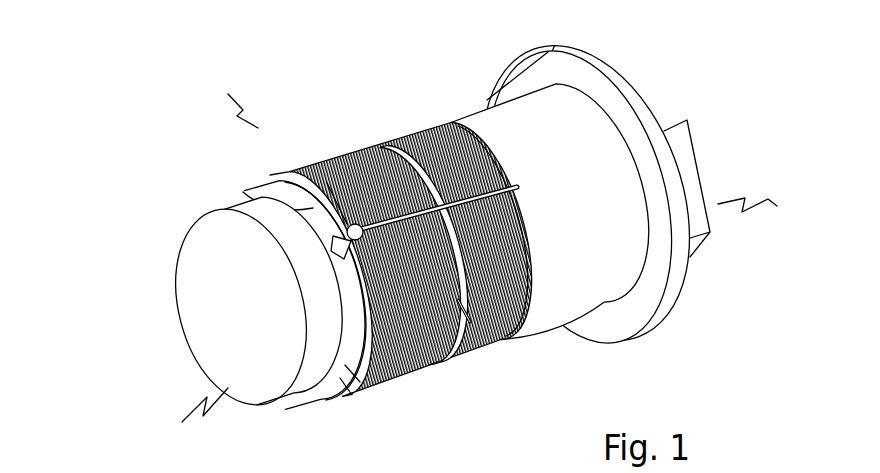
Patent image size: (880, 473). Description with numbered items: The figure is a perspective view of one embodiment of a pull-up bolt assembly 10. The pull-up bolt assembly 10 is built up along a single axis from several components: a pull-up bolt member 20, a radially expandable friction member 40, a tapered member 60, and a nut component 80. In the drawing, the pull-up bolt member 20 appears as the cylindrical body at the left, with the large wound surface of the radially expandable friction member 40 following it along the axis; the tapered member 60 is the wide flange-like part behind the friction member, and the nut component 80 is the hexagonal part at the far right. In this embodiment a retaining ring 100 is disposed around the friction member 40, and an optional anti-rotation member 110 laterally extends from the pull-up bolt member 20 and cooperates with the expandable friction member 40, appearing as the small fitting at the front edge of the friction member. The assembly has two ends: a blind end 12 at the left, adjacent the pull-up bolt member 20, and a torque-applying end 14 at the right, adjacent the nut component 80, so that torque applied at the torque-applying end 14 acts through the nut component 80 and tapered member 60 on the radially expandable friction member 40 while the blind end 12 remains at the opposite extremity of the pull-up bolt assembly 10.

The pull-up bolt assembly 10 is at (227, 93).
The blind end 12 is at (195, 424).
The torque-applying end 14 is at (762, 208).
The pull-up bolt member 20 is at (208, 308).
The radially expandable friction member 40 is at (403, 130).
The tapered member 60 is at (598, 63).
The nut component 80 is at (675, 118).
The retaining ring 100 is at (478, 357).
The anti-rotation member 110 is at (257, 228).